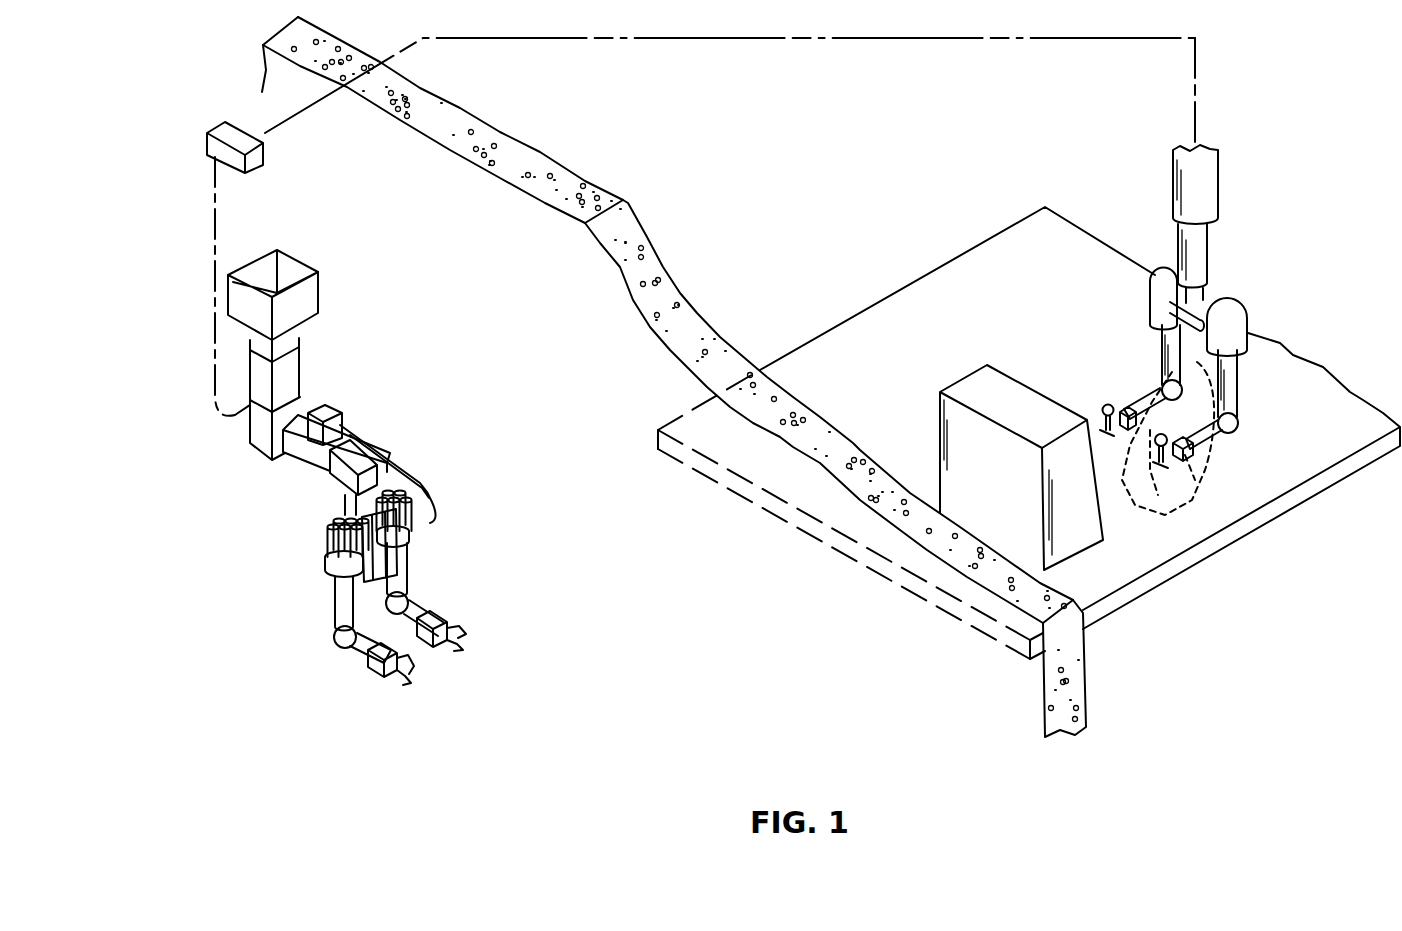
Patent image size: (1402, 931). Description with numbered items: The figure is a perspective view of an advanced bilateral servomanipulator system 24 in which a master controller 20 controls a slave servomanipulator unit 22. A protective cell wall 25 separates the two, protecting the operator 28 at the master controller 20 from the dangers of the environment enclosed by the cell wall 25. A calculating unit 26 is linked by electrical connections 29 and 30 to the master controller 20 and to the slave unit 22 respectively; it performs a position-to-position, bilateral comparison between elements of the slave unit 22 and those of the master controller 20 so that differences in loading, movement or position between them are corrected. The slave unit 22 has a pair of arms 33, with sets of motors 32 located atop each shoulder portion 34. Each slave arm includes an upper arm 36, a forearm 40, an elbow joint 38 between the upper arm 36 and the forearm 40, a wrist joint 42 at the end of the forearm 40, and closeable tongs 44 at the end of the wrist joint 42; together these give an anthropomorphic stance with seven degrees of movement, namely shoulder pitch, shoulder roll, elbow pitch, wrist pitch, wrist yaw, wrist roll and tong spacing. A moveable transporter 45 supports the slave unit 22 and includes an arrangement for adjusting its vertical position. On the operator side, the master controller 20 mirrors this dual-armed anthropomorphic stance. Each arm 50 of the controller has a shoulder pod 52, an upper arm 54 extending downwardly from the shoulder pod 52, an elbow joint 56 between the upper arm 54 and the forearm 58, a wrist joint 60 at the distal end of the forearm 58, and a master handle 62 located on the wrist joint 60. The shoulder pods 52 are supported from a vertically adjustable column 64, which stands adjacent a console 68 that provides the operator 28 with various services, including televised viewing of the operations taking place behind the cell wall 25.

The master controller 20 is at (1293, 320).
The slave servomanipulator unit 22 is at (450, 600).
The advanced bilateral servomanipulator system 24 is at (911, 630).
The protective cell wall 25 is at (500, 126).
The calculating unit 26 is at (265, 167).
The operator 28 is at (1183, 417).
The electrical connection 29 is at (780, 40).
The electrical connection 30 is at (218, 230).
The sets of motors 32 is at (333, 520).
The arms 33 is at (403, 578).
The shoulder portion 34 is at (320, 558).
The upper arm 36 is at (337, 602).
The elbow joint 38 is at (333, 637).
The forearm 40 is at (363, 657).
The wrist joint 42 is at (380, 670).
The closeable tongs 44 is at (410, 678).
The moveable transporter 45 is at (318, 272).
The arm 50 is at (1240, 386).
The shoulder pod 52 is at (1230, 297).
The upper arm 54 is at (1162, 333).
The elbow joint 56 is at (1163, 381).
The forearm 58 is at (1140, 393).
The wrist joint 60 is at (1110, 410).
The master handle 62 is at (1138, 493).
The vertically adjustable column 64 is at (1218, 160).
The console 68 is at (1080, 553).